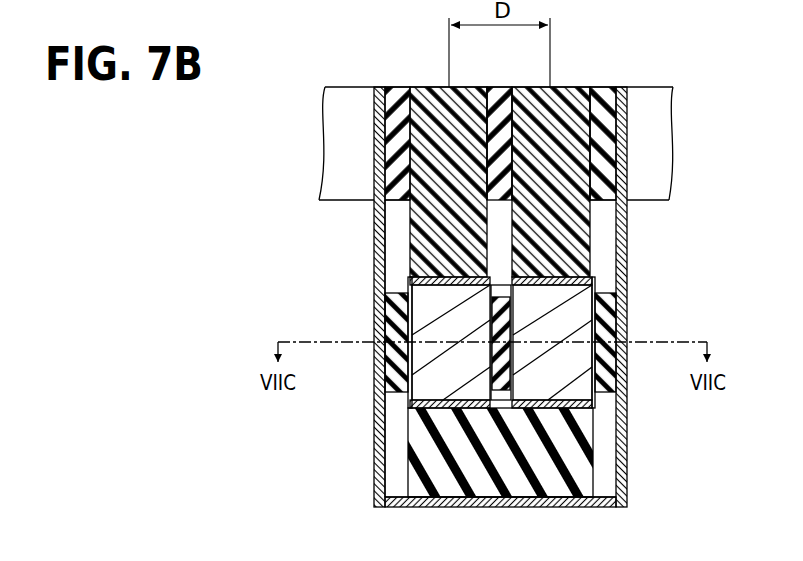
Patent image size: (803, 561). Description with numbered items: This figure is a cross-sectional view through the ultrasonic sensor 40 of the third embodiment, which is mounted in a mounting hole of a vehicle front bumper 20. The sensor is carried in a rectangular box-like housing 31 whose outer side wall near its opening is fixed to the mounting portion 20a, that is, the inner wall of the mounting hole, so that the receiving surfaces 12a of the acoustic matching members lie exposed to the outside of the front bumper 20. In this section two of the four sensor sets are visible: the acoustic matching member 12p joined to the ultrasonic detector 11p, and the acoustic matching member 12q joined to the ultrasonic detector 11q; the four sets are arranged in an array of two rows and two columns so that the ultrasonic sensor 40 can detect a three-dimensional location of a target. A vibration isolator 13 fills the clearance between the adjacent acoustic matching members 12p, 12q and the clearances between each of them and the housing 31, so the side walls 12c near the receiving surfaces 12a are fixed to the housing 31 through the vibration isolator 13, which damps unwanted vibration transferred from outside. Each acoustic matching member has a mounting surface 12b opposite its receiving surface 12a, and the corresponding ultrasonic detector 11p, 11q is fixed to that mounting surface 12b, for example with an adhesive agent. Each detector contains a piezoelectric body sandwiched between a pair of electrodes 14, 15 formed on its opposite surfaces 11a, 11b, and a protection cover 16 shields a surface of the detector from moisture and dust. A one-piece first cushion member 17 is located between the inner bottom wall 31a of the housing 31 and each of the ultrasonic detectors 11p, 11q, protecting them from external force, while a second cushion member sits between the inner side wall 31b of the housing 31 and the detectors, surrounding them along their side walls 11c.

The front bumper 20 is at (356, 87).
The mounting portion 20a is at (374, 170).
The ultrasonic sensor 40 is at (660, 78).
The vibration isolator 13 is at (405, 87).
The receiving surface 12a is at (512, 128).
The side wall of acoustic matching member 12c is at (590, 116).
The acoustic matching member 12p is at (440, 208).
The acoustic matching member 12q is at (578, 218).
The mounting surface 12b is at (410, 281).
The electrode 14 is at (598, 281).
The side wall of ultrasonic detector 11c is at (390, 305).
The surface of piezoelectric body 11a is at (616, 313).
The ultrasonic detector 11p is at (428, 372).
The ultrasonic detector 11q is at (596, 393).
The surface of piezoelectric body 11b is at (441, 465).
The electrode 15 is at (410, 405).
The protection cover 16 is at (578, 392).
The first cushion member 17 is at (497, 465).
The housing 31 is at (627, 442).
The inner bottom wall of housing 31a is at (384, 487).
The inner side wall of housing 31b is at (606, 467).